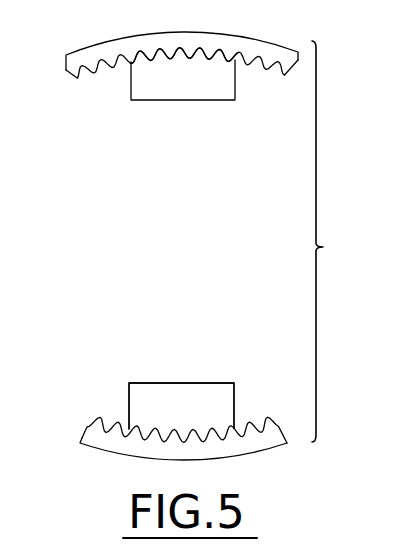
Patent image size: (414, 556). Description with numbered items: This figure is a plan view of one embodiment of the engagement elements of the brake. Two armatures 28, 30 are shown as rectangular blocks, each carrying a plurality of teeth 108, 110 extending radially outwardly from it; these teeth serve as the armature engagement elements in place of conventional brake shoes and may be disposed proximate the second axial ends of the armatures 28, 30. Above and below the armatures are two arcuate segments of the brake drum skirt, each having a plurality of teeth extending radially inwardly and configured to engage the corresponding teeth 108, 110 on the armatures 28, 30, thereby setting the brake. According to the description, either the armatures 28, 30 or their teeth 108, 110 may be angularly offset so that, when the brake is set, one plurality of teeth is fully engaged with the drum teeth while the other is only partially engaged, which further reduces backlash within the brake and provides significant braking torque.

The armature 28 is at (148, 95).
The armature 30 is at (208, 388).
The teeth 108 is at (163, 58).
The teeth 110 is at (160, 402).